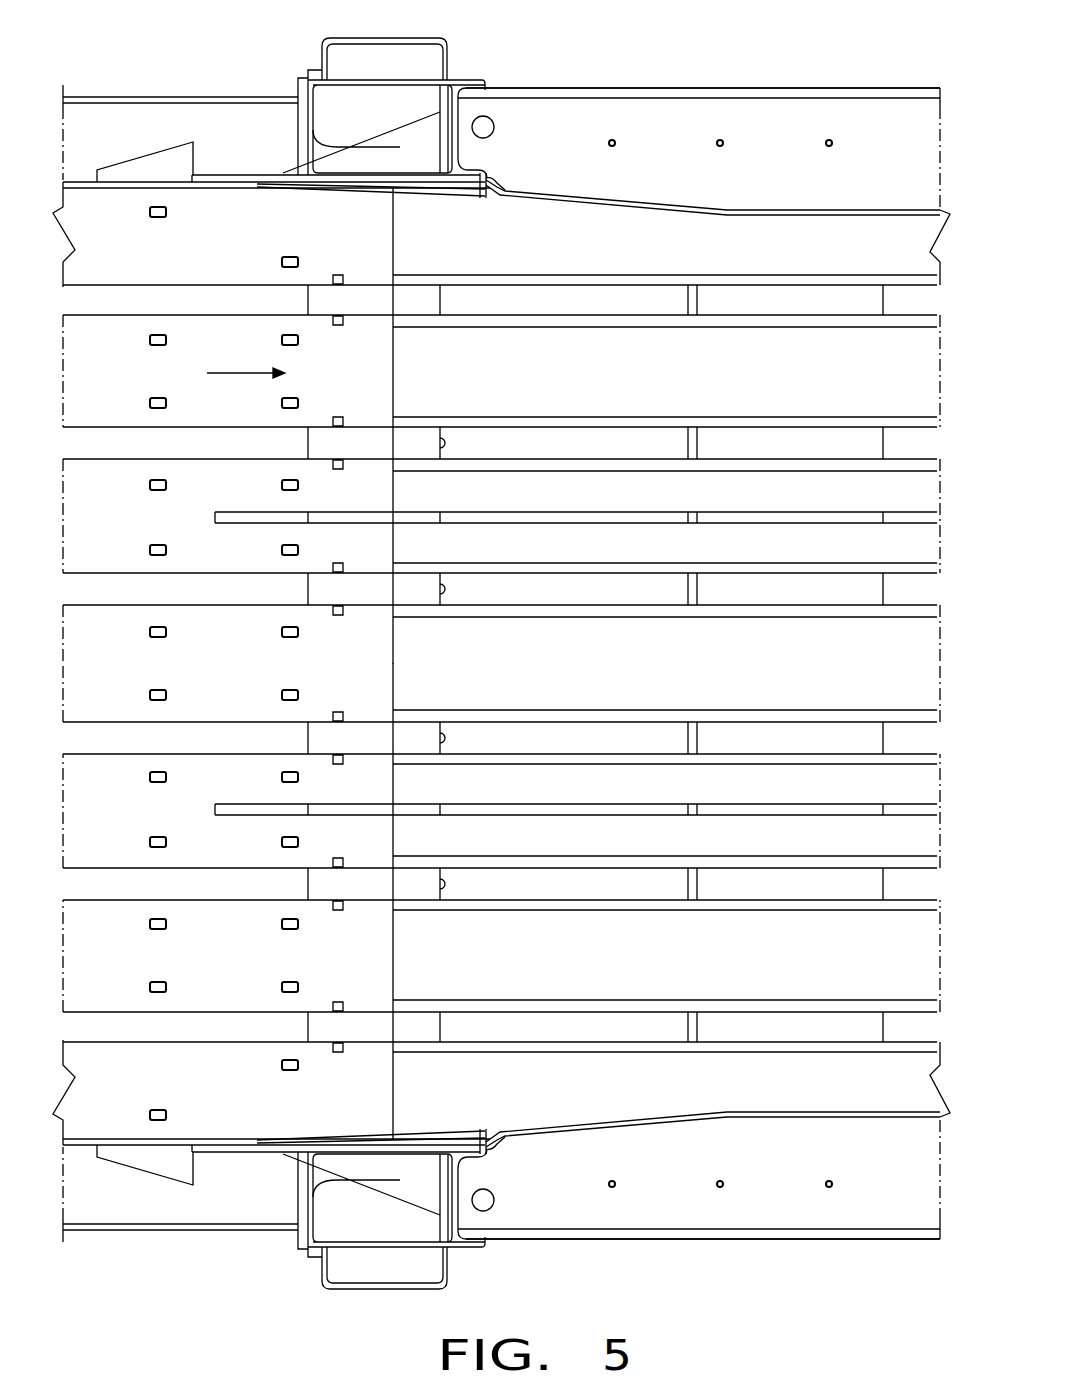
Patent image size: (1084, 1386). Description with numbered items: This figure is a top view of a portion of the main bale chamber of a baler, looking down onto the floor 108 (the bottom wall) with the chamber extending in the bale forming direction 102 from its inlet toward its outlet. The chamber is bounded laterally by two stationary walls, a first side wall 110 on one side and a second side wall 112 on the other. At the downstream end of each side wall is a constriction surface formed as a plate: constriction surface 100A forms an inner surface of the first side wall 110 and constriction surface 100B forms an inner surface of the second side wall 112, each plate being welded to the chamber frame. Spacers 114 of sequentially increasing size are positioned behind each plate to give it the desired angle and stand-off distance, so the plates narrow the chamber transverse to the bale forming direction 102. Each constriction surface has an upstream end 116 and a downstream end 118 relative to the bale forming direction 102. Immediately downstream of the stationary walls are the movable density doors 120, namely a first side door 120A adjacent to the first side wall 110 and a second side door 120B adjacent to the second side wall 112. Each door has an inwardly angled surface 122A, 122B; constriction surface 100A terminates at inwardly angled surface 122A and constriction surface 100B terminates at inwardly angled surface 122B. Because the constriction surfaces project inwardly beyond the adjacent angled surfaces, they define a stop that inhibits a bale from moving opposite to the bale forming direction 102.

The constriction surface 100A is at (432, 197).
The constriction surface 100B is at (432, 1128).
The bale forming direction 102 is at (238, 376).
The floor 108 is at (187, 502).
The first side wall 110 is at (219, 165).
The second side wall 112 is at (216, 1163).
The spacers 114 is at (384, 187).
The upstream end 116 is at (268, 192).
The downstream end 118 is at (480, 200).
The density doors 120 is at (845, 78).
The first side door 120A is at (633, 120).
The second side door 120B is at (652, 1212).
The inwardly angled surface 122A is at (624, 205).
The inwardly angled surface 122B is at (636, 1102).